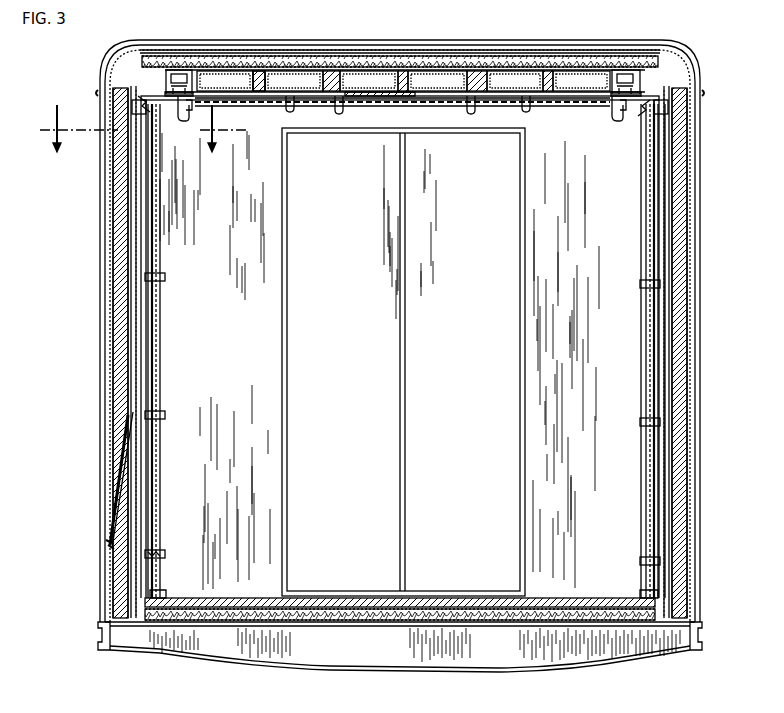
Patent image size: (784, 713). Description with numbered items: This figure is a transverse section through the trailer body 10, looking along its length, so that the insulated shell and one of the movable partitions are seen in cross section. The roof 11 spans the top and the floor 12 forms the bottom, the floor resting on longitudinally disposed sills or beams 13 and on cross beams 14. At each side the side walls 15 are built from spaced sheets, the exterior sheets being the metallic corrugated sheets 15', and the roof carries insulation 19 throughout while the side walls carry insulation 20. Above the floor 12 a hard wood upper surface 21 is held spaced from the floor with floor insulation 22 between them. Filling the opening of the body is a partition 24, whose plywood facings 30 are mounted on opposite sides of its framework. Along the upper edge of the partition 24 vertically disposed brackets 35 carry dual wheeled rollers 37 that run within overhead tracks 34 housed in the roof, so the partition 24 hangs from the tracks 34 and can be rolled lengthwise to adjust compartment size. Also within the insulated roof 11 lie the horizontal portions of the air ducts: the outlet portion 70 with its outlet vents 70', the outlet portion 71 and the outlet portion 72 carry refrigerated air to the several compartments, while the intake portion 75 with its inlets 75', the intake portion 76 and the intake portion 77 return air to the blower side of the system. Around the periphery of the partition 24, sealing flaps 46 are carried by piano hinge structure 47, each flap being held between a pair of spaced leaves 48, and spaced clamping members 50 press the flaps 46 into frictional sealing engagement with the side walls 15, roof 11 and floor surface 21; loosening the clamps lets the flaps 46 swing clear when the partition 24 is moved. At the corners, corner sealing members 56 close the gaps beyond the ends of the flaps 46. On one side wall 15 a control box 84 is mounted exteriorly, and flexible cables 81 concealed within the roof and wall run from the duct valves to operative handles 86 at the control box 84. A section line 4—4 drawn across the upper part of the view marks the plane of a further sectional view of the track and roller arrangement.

The trailer body 10 is at (703, 163).
The roof 11 is at (482, 50).
The floor 12 is at (360, 612).
The sills or beams 13 is at (100, 628).
The cross beams 14 is at (433, 672).
The side walls 15 is at (404, 353).
The corrugated exterior sheets 15' is at (406, 352).
The roof insulation 19 is at (402, 62).
The wall insulation 20 is at (140, 570).
The upper surface 21 is at (270, 606).
The floor insulation 22 is at (458, 612).
The partition 24 is at (648, 334).
The facings 30 is at (252, 528).
The tracks 34 is at (192, 74).
The brackets 35 is at (188, 112).
The dual wheeled rollers 37 is at (181, 72).
The flaps 46 is at (654, 373).
The piano hinge structure 47 is at (252, 105).
The leaves 48 is at (305, 103).
The clamping members 50 is at (475, 108).
The corner sealing members 56 is at (140, 99).
The outlet portion 70 is at (405, 54).
The outlet vents 70' is at (402, 111).
The outlet portion 71 is at (298, 82).
The outlet portion 72 is at (256, 72).
The intake portion 75 is at (581, 52).
The inlets 75' is at (465, 109).
The intake portion 76 is at (535, 82).
The intake portion 77 is at (440, 82).
The flexible cables 81 is at (124, 450).
The control box 84 is at (106, 512).
The operative handles 86 is at (105, 540).
The section line 4- 4 is at (139, 129).